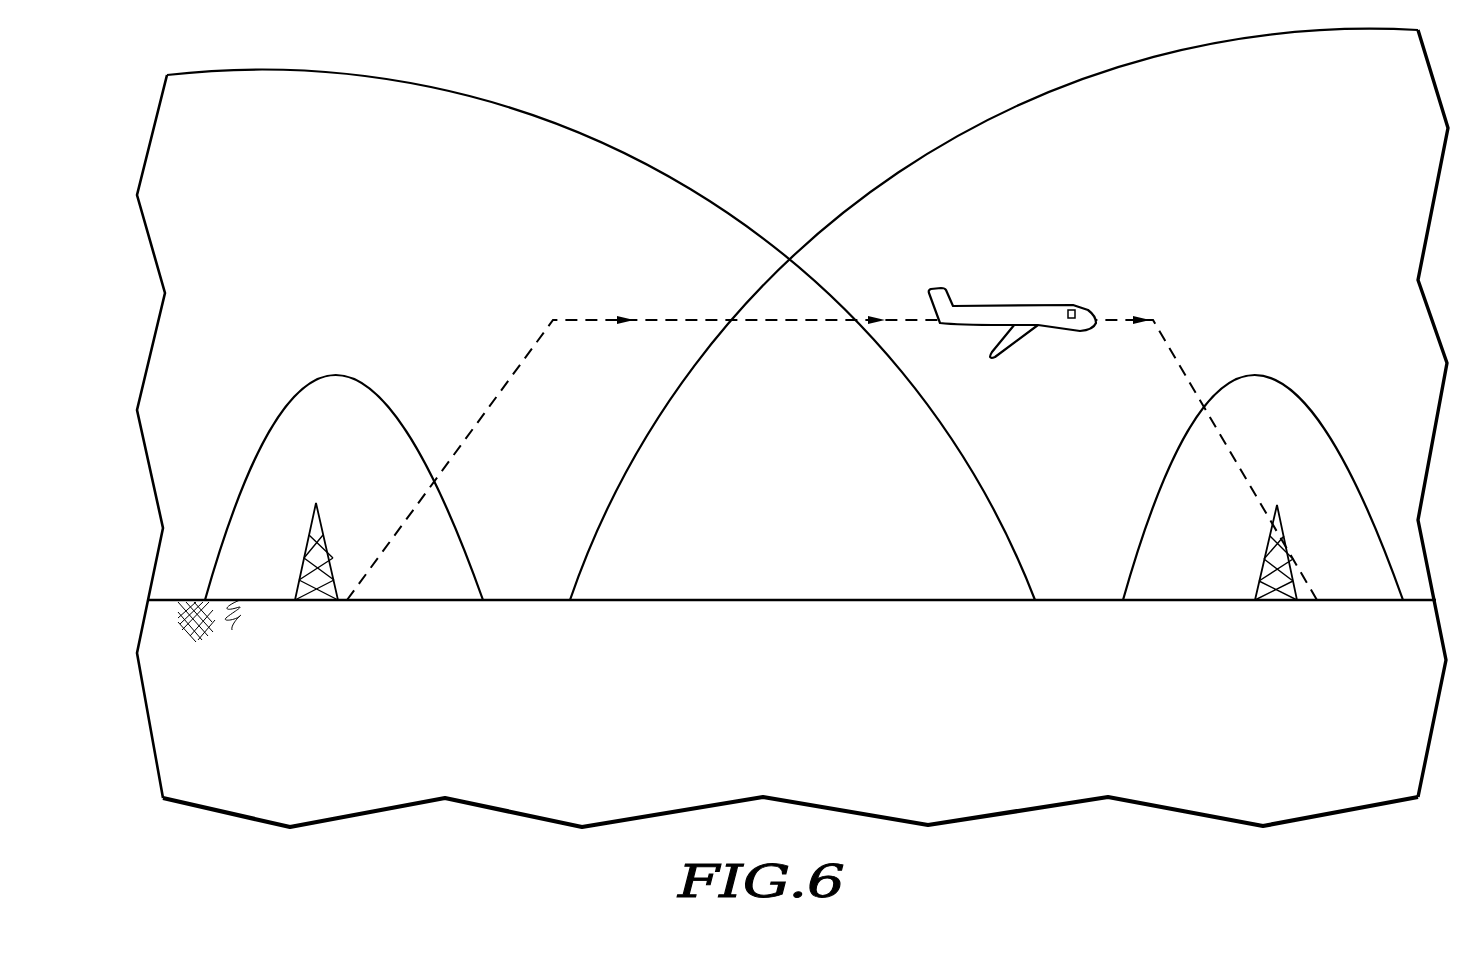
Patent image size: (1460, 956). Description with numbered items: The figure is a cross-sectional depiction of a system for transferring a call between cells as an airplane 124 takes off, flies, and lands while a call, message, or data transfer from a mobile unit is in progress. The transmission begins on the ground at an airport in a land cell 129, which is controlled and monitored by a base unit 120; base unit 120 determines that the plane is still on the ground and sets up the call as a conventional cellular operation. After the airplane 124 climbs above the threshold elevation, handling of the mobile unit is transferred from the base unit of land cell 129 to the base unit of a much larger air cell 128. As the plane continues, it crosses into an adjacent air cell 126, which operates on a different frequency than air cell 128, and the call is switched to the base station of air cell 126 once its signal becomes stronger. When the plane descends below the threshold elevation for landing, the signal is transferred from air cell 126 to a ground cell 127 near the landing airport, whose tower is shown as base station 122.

The base unit 120 is at (323, 530).
The second ground station tower 122 is at (1264, 560).
The airplane 124 is at (1033, 303).
The air cell 126 is at (1186, 195).
The cell 127 is at (1269, 433).
The air cell 128 is at (533, 293).
The cell 129 is at (351, 434).